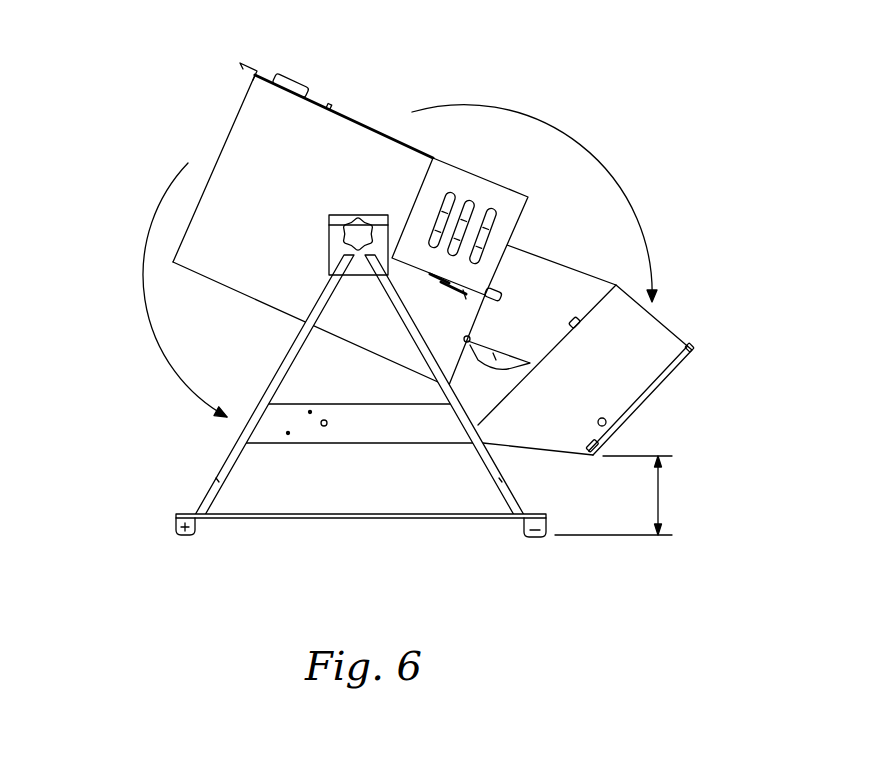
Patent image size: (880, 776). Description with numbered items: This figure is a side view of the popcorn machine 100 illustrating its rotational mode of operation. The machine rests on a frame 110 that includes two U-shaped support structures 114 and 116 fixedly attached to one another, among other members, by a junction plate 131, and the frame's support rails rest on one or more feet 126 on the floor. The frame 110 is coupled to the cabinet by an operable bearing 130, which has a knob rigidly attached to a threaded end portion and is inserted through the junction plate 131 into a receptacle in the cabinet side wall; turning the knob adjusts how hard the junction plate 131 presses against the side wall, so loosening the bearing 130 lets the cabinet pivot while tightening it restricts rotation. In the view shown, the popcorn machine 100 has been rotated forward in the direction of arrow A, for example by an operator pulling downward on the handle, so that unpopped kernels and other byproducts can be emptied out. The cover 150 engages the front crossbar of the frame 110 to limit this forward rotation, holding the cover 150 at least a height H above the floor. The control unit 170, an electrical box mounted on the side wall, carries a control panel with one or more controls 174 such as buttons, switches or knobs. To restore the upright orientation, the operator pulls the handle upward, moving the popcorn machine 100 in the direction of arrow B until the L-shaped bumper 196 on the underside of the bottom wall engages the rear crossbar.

The popcorn machine 100 is at (406, 315).
The frame 110 is at (342, 569).
The U-shaped support structure 114 is at (510, 492).
The U-shaped support structure 116 is at (231, 452).
The foot 126 is at (182, 538).
The bearing 130 is at (360, 228).
The junction plate 131 is at (337, 245).
The cover 150 is at (688, 403).
The control unit 170 is at (460, 210).
The controls 174 is at (473, 203).
The bumper 196 is at (240, 62).
The direction of forward rotation A is at (587, 152).
The direction of return rotation B is at (145, 280).
The height of cover above floor H is at (659, 493).